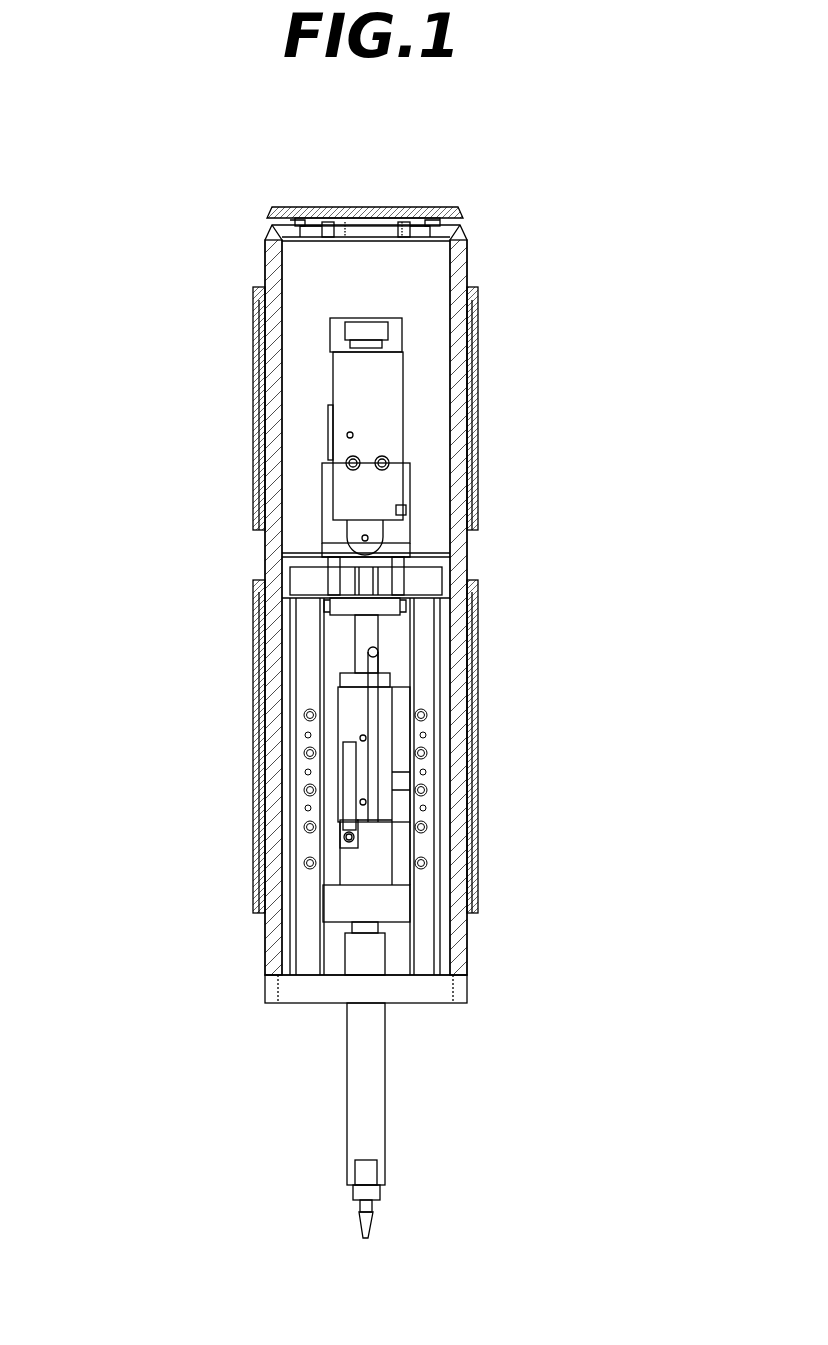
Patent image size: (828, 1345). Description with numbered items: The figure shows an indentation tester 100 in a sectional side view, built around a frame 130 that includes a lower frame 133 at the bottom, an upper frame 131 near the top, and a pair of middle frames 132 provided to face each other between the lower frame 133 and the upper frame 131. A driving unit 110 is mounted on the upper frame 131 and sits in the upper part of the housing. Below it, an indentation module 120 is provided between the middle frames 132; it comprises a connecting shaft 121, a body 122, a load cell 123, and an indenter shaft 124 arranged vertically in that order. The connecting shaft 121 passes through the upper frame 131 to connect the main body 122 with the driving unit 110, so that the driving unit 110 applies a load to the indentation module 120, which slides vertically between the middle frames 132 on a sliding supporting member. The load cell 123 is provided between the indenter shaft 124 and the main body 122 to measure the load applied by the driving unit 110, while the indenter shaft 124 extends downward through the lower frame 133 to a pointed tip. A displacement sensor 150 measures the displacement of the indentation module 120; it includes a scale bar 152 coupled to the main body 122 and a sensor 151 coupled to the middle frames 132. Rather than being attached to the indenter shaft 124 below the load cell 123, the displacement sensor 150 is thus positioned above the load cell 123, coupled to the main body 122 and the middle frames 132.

The indentation tester 100 is at (176, 211).
The driving unit 110 is at (340, 343).
The indentation module 120 is at (566, 675).
The connecting shaft 121 is at (368, 633).
The body 122 is at (383, 698).
The load cell 123 is at (377, 893).
The indenter shaft 124 is at (372, 1030).
The frame 130 is at (442, 560).
The upper frame 131 is at (308, 578).
The middle frames 132 is at (308, 688).
The lower frame 133 is at (300, 992).
The displacement sensor 150 is at (172, 757).
The sensor 151 is at (365, 770).
The scale bar 152 is at (350, 808).